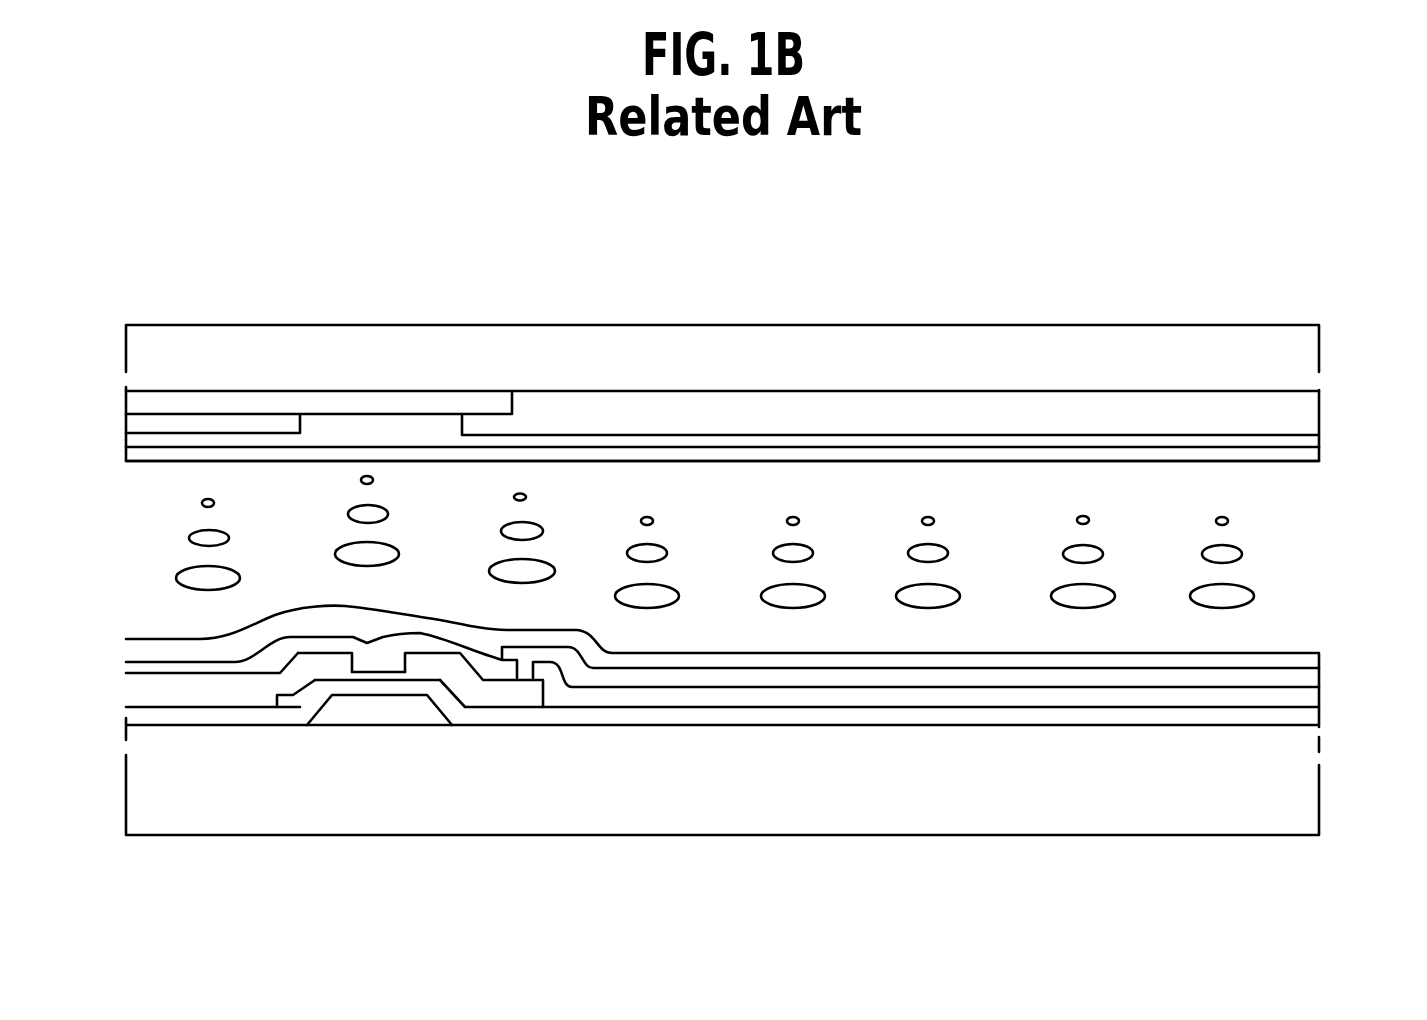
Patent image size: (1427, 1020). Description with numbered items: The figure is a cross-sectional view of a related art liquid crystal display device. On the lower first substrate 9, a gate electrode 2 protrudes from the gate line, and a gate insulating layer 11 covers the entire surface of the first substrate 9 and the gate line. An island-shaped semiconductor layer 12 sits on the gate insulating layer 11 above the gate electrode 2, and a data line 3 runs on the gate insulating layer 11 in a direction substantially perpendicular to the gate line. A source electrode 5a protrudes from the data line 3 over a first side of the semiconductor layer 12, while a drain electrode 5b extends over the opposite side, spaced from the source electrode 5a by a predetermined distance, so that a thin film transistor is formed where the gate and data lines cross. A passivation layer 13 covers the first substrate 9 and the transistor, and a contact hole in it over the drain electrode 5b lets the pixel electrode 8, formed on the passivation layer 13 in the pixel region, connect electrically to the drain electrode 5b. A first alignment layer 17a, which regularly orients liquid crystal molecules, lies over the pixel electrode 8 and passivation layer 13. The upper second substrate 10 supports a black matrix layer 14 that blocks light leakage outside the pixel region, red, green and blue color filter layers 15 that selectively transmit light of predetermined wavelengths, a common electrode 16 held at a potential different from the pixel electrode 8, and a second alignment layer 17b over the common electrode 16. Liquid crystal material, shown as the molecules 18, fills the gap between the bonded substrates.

The second substrate 10 is at (140, 352).
The black matrix layer 14 is at (138, 405).
The color filter layers 15 is at (1313, 407).
The common electrode 16 is at (1312, 442).
The second alignment layer 17b is at (1292, 455).
The liquid crystal molecules 18 is at (1205, 588).
The first alignment layer 17a is at (1270, 662).
The pixel electrode 8 is at (1313, 677).
The passivation layer 13 is at (133, 665).
The data line 3 is at (196, 690).
The source electrode 5a is at (315, 658).
The semiconductor layer 12 is at (393, 677).
The drain electrode 5b is at (505, 688).
The gate electrode 2 is at (369, 712).
The gate insulating layer 11 is at (1312, 718).
The first substrate 9 is at (1313, 785).